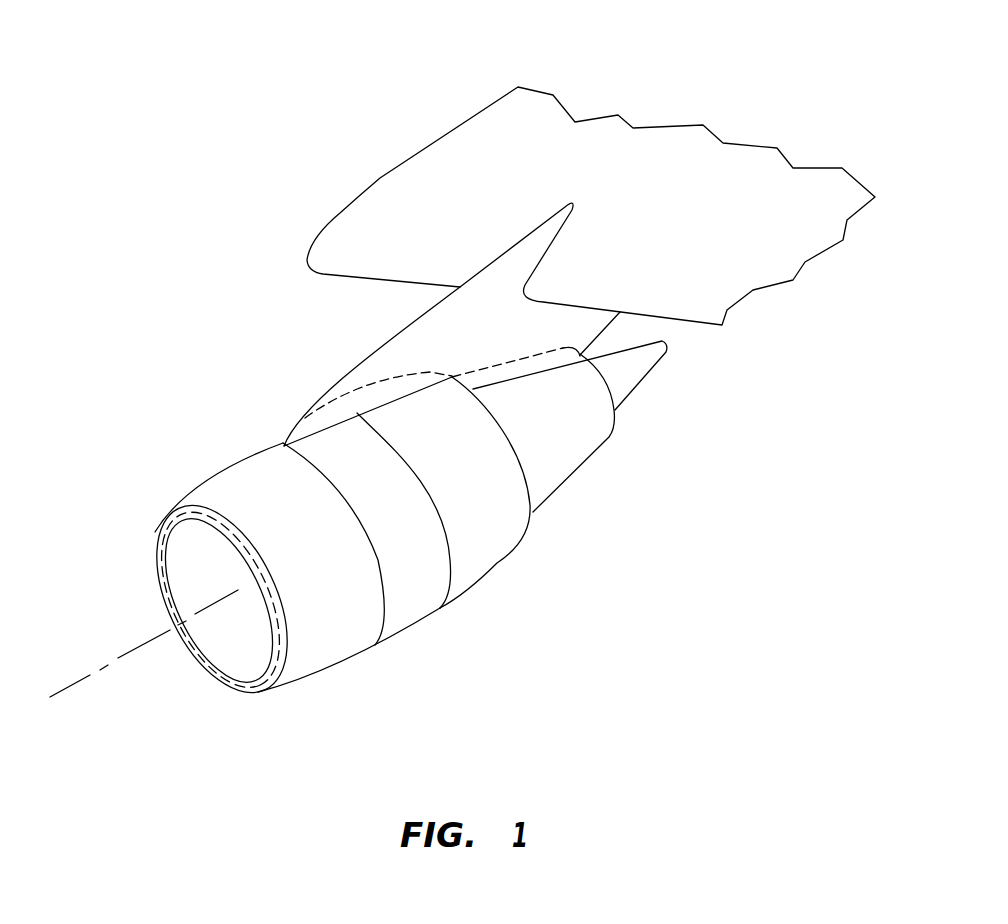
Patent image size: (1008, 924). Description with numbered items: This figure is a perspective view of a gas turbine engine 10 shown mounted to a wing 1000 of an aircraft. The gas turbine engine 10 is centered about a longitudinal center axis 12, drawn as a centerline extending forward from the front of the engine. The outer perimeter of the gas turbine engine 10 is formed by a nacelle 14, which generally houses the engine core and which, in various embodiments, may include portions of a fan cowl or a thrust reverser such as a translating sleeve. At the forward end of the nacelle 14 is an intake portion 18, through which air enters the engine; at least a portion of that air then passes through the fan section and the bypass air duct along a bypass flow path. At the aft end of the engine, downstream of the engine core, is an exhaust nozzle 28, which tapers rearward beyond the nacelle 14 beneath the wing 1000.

The gas turbine engine 10 is at (412, 409).
The wing 1000 is at (735, 184).
The longitudinal center axis 12 is at (53, 699).
The nacelle 14 is at (341, 688).
The intake portion 18 is at (122, 588).
The exhaust nozzle 28 is at (674, 388).